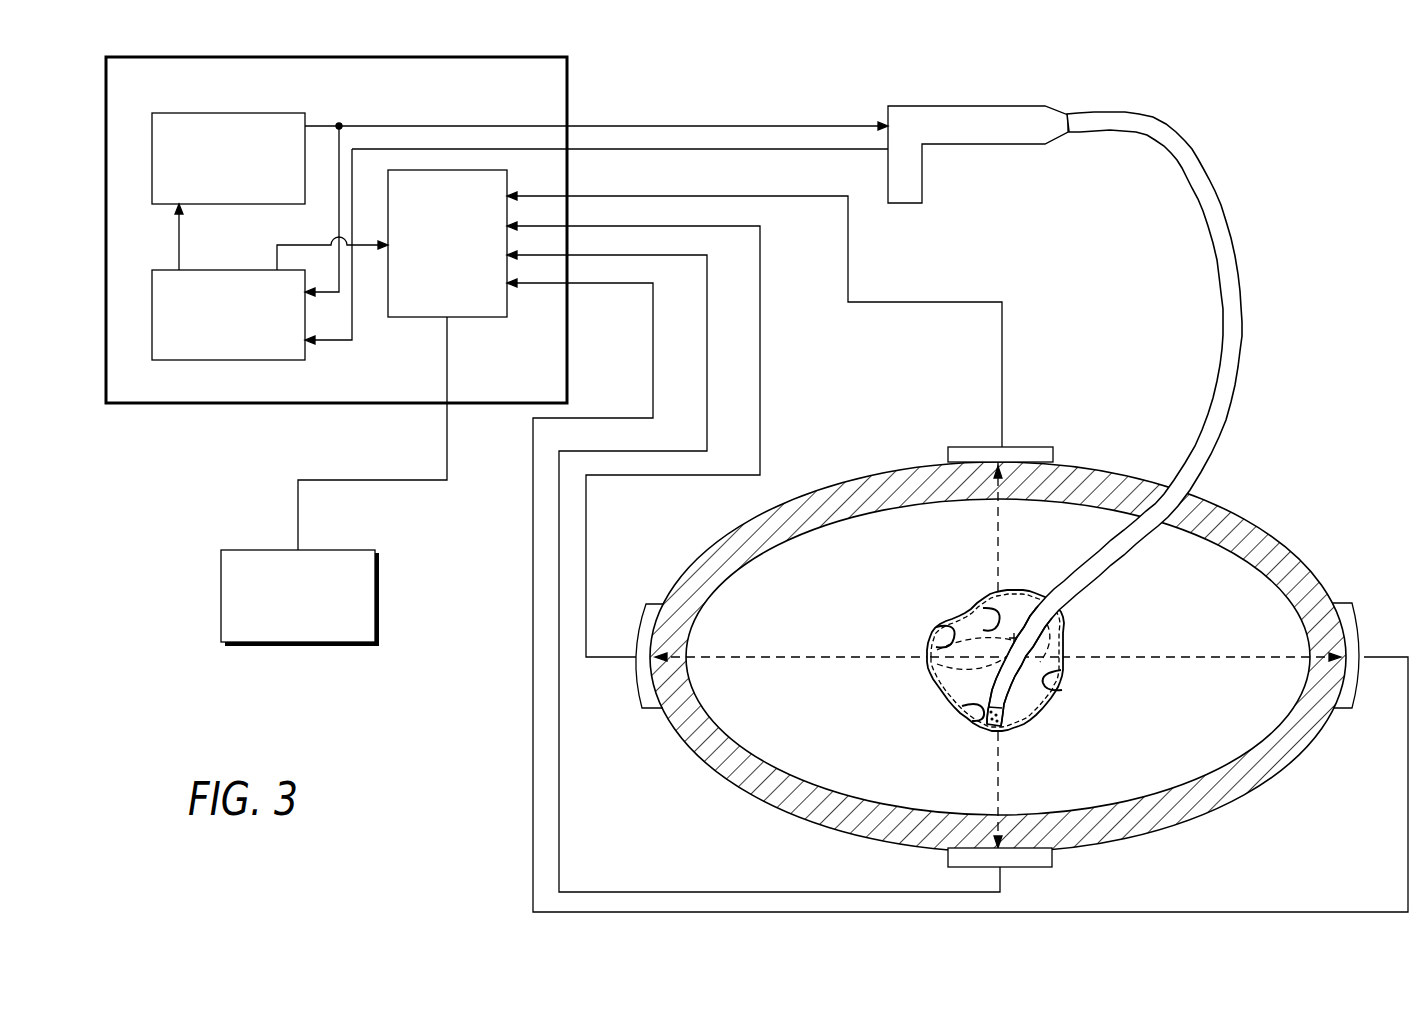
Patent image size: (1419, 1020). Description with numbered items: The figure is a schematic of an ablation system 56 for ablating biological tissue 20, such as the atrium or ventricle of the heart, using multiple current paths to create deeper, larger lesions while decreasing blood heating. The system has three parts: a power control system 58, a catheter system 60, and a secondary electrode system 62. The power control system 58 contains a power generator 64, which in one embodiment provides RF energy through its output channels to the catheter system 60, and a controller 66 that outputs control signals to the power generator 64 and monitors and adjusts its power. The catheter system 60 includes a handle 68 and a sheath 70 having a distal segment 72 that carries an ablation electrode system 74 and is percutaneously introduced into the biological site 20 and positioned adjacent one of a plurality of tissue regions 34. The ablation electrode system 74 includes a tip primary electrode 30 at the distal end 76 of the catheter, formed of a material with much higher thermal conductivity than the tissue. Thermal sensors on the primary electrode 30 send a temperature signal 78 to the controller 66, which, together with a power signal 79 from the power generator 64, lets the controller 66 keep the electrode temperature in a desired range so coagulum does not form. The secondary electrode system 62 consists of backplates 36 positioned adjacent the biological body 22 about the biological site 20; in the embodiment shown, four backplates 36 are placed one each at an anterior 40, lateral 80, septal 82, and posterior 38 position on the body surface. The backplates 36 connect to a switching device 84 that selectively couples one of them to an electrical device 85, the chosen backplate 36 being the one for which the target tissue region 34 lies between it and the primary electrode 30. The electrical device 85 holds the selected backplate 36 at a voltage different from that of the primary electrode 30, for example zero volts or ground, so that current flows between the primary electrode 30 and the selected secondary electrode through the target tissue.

The biological tissue 20 is at (1063, 640).
The biological body 22 is at (881, 476).
The tip primary electrode 30 is at (1015, 720).
The tissue region 34 is at (977, 633).
The backplate 36 is at (1003, 643).
The posterior position 38 is at (1065, 850).
The anterior position 40 is at (1062, 465).
The ablation system 56 is at (597, 108).
The power control system 58 is at (170, 437).
The catheter system 60 is at (1220, 106).
The secondary electrode system 62 is at (498, 716).
The power generator 64 is at (270, 113).
The controller 66 is at (200, 360).
The handle 68 is at (983, 106).
The sheath 70 is at (1163, 419).
The distal segment 72 is at (1112, 563).
The ablation electrode system 74 is at (1020, 698).
The distal end 76 is at (967, 713).
The temperature signal 78 is at (827, 149).
The power signal 79 is at (347, 142).
The lateral position 80 is at (1348, 603).
The septal position 82 is at (665, 603).
The switching device 84 is at (473, 317).
The electrical device 85 is at (221, 590).